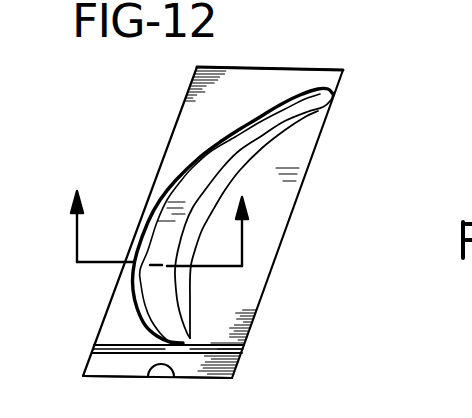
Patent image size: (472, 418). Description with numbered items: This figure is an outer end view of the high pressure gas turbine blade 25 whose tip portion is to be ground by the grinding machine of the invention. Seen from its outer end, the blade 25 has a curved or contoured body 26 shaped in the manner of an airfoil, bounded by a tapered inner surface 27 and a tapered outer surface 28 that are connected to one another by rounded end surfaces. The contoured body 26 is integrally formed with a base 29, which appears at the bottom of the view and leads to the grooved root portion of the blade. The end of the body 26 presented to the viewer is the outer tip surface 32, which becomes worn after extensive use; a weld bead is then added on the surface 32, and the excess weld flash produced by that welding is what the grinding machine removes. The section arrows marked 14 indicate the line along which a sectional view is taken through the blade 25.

The high pressure gas turbine blade 25 is at (308, 60).
The curved or contoured body 26 is at (200, 153).
The tapered inner surface 27 is at (191, 278).
The tapered outer surface 28 is at (133, 277).
The base 29 is at (248, 318).
The outer tip surface 32 is at (276, 116).
The section line 14- 14 is at (157, 228).